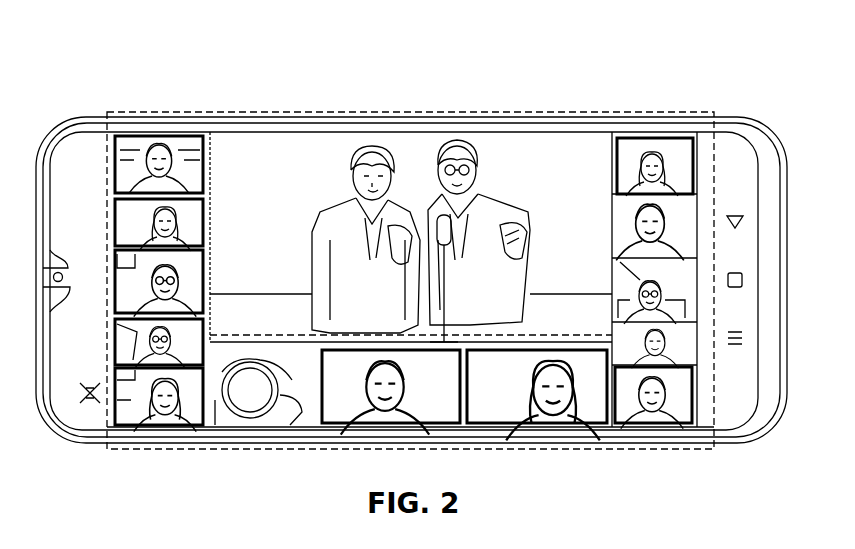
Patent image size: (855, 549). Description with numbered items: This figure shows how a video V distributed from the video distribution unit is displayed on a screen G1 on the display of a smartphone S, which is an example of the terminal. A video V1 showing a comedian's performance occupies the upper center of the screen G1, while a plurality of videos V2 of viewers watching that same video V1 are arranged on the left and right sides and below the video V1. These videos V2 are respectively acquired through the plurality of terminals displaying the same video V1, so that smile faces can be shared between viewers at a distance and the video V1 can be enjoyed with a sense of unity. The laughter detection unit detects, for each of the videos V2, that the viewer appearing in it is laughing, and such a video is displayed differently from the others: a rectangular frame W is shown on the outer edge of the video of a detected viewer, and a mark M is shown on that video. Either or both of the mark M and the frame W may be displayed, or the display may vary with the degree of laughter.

The smartphone S is at (733, 116).
The screen G1 is at (545, 128).
The video V is at (192, 70).
The video showing a comedian's performance V1 is at (407, 147).
The videos of viewers V2 is at (195, 132).
The mark M is at (253, 428).
The rectangular frame W is at (358, 428).